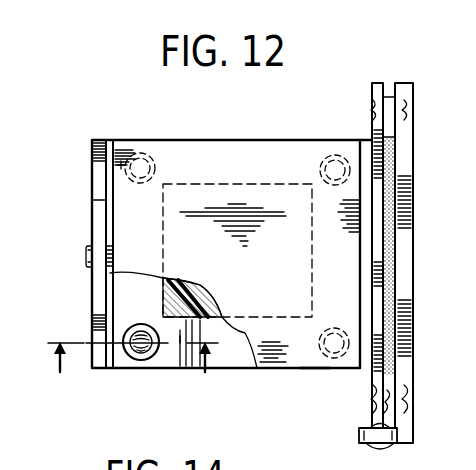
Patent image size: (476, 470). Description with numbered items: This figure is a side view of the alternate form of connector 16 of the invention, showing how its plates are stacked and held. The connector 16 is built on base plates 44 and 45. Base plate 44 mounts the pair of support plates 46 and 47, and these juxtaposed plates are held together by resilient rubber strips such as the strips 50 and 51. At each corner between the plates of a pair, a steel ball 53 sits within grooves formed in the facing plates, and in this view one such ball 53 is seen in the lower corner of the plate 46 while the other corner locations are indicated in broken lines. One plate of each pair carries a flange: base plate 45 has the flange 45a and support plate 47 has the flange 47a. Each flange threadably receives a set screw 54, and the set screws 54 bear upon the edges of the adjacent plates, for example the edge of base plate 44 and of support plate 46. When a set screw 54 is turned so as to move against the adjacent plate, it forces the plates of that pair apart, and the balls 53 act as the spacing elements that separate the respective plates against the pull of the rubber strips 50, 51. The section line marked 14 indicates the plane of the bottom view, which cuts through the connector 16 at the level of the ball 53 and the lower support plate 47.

The section line 14- 14 is at (133, 371).
The connector 16 is at (317, 382).
The base plate 44 is at (375, 97).
The base plate 45 is at (404, 85).
The flange 45a is at (358, 437).
The support plate 46 is at (176, 158).
The support plate 47 is at (164, 360).
The flange 47a is at (96, 220).
The resilient rubber strip 50 is at (396, 285).
The resilient rubber strip 51 is at (163, 305).
The steel ball 53 is at (131, 360).
The set screw 54 is at (86, 256).